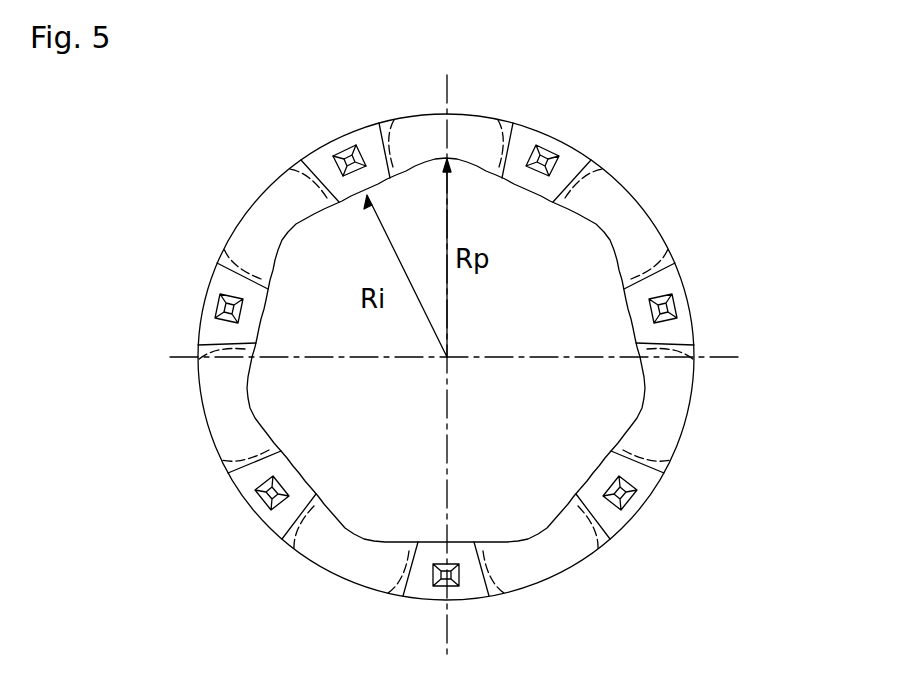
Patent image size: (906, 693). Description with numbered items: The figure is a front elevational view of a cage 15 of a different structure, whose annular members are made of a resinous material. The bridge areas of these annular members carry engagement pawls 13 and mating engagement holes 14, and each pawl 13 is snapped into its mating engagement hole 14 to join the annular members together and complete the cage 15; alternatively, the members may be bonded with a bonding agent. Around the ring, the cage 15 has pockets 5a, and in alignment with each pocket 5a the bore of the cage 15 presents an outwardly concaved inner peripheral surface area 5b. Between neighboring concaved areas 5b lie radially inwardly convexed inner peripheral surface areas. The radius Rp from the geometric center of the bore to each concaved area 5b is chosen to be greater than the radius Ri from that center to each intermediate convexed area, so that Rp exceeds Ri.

The pocket 5a is at (262, 218).
The outwardly concaved inner peripheral surface area 5b is at (255, 418).
The engagement pawl 13 is at (343, 156).
The engagement hole 14 is at (358, 147).
The cage 15 is at (627, 190).